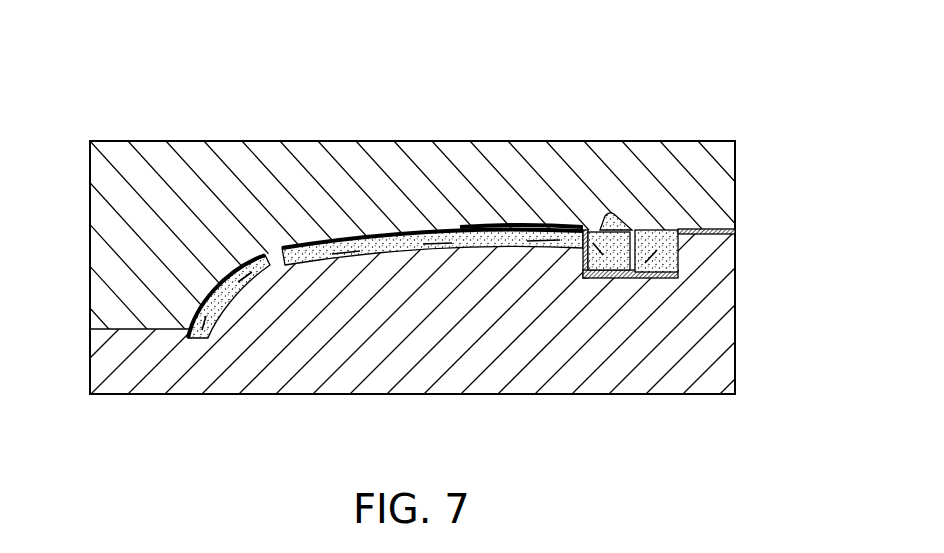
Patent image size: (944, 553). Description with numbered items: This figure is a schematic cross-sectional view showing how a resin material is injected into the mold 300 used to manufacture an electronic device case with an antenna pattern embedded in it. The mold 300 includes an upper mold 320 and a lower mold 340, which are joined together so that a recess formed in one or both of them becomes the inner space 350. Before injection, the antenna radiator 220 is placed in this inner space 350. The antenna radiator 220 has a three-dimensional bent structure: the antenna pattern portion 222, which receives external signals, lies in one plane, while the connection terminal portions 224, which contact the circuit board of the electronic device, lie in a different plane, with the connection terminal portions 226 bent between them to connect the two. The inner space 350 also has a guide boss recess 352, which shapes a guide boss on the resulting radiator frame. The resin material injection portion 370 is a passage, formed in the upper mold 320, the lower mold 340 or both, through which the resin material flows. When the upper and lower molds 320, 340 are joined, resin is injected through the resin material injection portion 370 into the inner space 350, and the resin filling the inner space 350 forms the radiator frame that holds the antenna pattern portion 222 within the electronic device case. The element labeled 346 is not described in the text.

The mold 300 is at (154, 31).
The antenna radiator 220 is at (421, 217).
The antenna pattern portion 222 is at (421, 232).
The connection terminal portions 224 is at (658, 278).
The connection terminal portions 226 is at (569, 230).
The upper mold 320 is at (420, 141).
The lower mold 340 is at (728, 393).
The accommodating groove filler 346 is at (678, 260).
The inner space 350 is at (213, 296).
The guide boss recess 352 is at (614, 215).
The resin material injection portion 370 is at (735, 232).